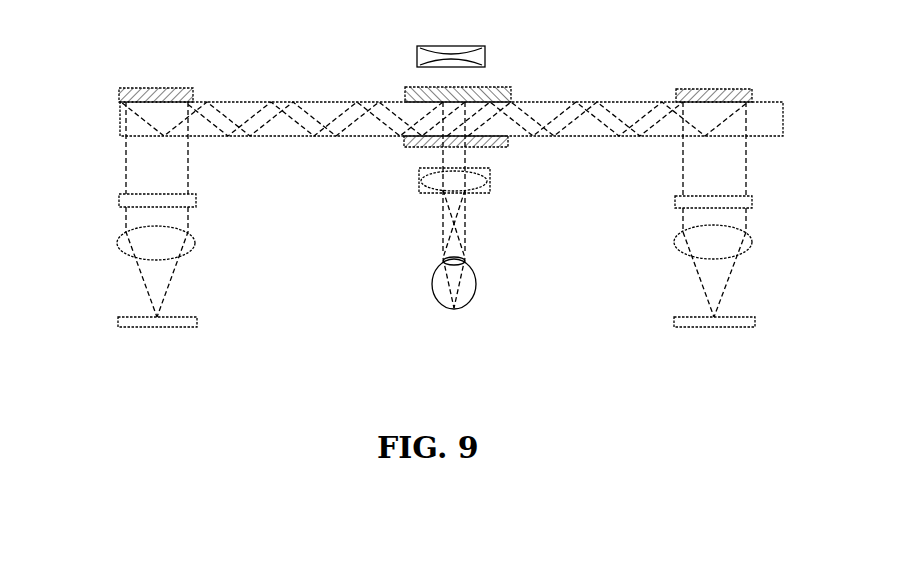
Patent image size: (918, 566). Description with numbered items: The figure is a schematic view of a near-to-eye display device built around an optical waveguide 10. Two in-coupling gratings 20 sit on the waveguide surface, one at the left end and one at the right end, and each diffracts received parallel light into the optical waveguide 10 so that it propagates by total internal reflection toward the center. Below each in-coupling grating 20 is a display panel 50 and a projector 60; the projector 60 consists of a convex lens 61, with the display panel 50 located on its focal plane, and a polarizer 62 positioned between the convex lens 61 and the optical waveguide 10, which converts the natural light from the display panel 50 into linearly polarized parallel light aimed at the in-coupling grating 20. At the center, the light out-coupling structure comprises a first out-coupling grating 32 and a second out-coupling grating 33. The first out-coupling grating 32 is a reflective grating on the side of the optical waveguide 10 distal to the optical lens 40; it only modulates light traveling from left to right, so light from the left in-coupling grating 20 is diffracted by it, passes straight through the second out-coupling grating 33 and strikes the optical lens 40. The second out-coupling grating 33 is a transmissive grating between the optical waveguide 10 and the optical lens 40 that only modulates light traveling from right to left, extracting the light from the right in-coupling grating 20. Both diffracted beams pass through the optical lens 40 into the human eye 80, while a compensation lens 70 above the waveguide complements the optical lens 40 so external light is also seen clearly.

The optical waveguide 10 is at (250, 102).
The in-coupling grating 20 is at (155, 88).
The first out-coupling grating 32 is at (505, 88).
The second out-coupling grating 33 is at (508, 144).
The optical lens 40 is at (490, 185).
The display panel 50 is at (118, 320).
The projector 60 is at (60, 190).
The convex lens 61 is at (118, 243).
The polarizer 62 is at (119, 201).
The compensation lens 70 is at (470, 46).
The human eye 80 is at (476, 288).